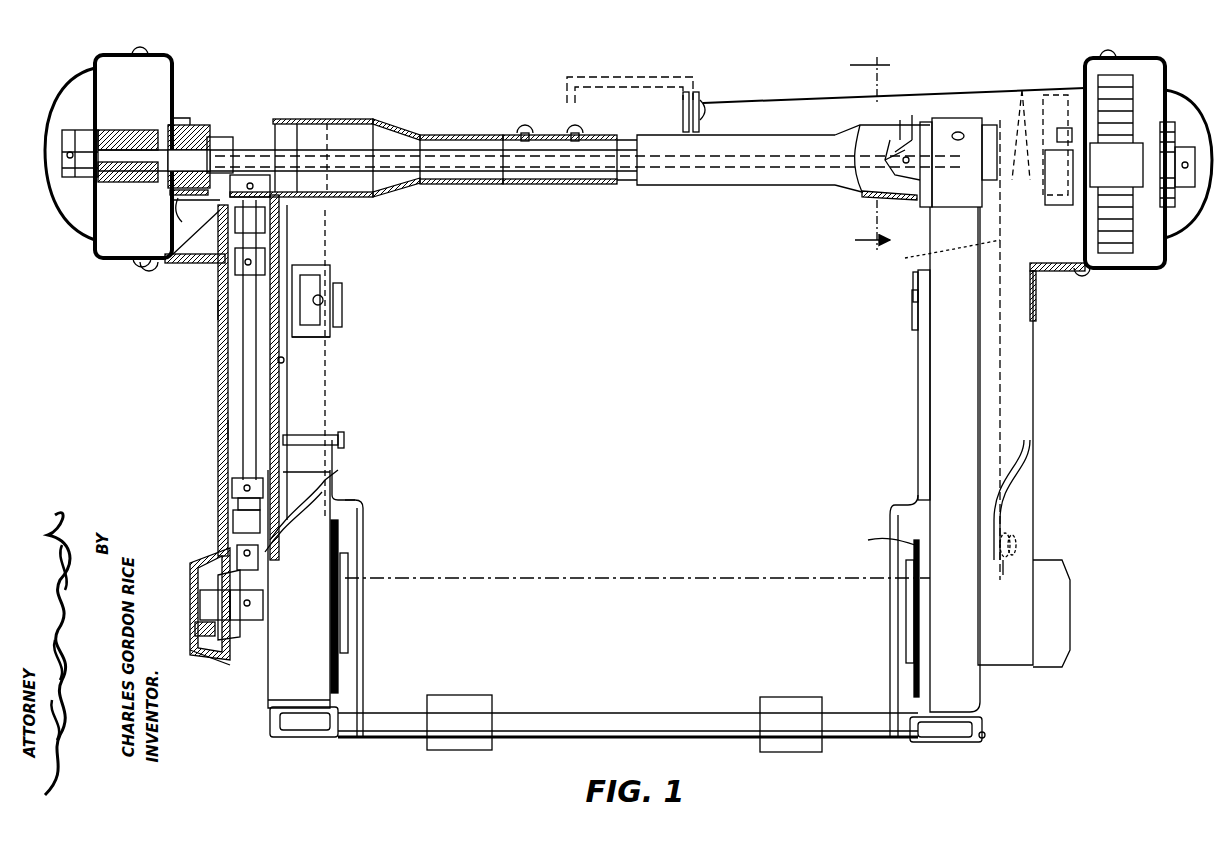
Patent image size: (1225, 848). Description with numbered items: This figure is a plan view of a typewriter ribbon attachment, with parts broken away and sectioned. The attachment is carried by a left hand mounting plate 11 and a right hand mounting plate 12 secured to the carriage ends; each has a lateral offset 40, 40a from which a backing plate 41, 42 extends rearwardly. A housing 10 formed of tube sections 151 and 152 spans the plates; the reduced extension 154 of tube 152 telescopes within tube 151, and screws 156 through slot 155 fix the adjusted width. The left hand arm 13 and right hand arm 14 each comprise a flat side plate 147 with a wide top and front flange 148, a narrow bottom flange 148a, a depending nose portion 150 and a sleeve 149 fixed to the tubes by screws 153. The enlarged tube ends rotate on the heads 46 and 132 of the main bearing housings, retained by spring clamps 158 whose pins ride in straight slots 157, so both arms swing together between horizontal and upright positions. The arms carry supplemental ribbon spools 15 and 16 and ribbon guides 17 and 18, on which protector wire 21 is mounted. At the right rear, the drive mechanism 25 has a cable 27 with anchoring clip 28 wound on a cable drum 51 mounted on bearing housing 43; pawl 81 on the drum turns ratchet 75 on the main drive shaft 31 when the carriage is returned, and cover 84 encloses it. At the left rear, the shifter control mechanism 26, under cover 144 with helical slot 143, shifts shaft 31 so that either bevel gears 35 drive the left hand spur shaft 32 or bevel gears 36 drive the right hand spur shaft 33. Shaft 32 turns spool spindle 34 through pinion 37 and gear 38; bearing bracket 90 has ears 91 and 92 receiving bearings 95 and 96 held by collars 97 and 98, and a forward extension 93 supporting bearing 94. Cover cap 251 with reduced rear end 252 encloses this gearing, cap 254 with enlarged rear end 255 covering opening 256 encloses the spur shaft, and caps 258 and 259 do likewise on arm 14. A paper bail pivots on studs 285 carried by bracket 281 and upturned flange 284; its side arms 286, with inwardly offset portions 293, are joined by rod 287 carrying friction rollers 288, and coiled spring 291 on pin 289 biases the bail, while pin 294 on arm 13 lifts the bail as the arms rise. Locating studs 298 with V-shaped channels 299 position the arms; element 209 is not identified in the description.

The housing 10 is at (722, 187).
The left hand mounting plate 11 is at (222, 372).
The right hand mounting plate 12 is at (1035, 403).
The left hand arm 13 is at (292, 412).
The right hand arm 14 is at (935, 410).
The supplemental ribbon spool 15 is at (340, 532).
The supplemental ribbon spool 16 is at (871, 303).
The ribbon guide 17 is at (288, 737).
The ribbon guide 18 is at (932, 742).
The separator wire 21 is at (582, 737).
The drive mechanism 25 is at (1132, 270).
The shifter control mechanism 26 is at (72, 238).
The cable 27 is at (957, 117).
The anchoring clip 28 is at (699, 100).
The main drive shaft 31 is at (462, 168).
The left hand spur shaft 32 is at (248, 402).
The right hand spur shaft 33 is at (944, 253).
The left hand ribbon spool spindle 34 is at (200, 606).
The bevel gears 35 is at (235, 140).
The bevel gears 36 is at (1022, 123).
The pinion 37 is at (237, 553).
The gear 38 is at (232, 640).
The lateral offset 40 is at (210, 264).
The lateral offset 40a is at (1040, 290).
The backing plate 41 is at (172, 80).
The backing plate 42 is at (1084, 272).
The bearing housing 43 is at (1138, 190).
The enlarged diameter portion 46 is at (1056, 131).
The cable drum 51 is at (1136, 82).
The ratchet 75 is at (1178, 126).
The pawl 81 is at (1170, 112).
The cover 84 is at (1172, 226).
The bearing bracket 90 is at (284, 362).
The ear 91 is at (266, 212).
The ear 92 is at (326, 492).
The forward extension 93 is at (192, 575).
The bearing 94 is at (196, 628).
The bearing 95 is at (268, 236).
The bearing 96 is at (238, 506).
The collar 97 is at (218, 310).
The collar 98 is at (232, 483).
The cup-shaped head 132 is at (188, 124).
The helical slot 143 is at (122, 185).
The cover 144 is at (100, 183).
The flat side plate 147 is at (332, 472).
The top and front flange 148 is at (356, 502).
The bottom flange 148a is at (302, 378).
The sleeve 149 is at (340, 120).
The nose portion 150 is at (300, 698).
The tube section 151 is at (392, 124).
The tube section 152 is at (800, 186).
The screws 153 is at (962, 131).
The reduced extension 154 is at (612, 176).
The slot 155 is at (584, 131).
The screws 156 is at (532, 130).
The straight slots 157 is at (178, 122).
The spring clamp 158 is at (1060, 226).
The screw 209 is at (986, 736).
The cover cap 251 is at (206, 655).
The rear end 252 is at (233, 518).
The cap 254 is at (222, 432).
The rear end 255 is at (168, 264).
The opening 256 is at (272, 192).
The cap 258 is at (1045, 568).
The cover cap 259 is at (1032, 466).
The bracket 281 is at (332, 270).
The upturned flange 284 is at (912, 280).
The studs 285 is at (343, 302).
The side arms 286 is at (890, 602).
The rod 287 is at (628, 712).
The friction rollers 288 is at (470, 700).
The pin 289 is at (332, 337).
The coiled spring 291 is at (322, 286).
The inwardly offset portions 293 is at (900, 500).
The pin 294 is at (322, 436).
The locating stud 298 is at (1020, 540).
The V-shaped channel 299 is at (1004, 578).